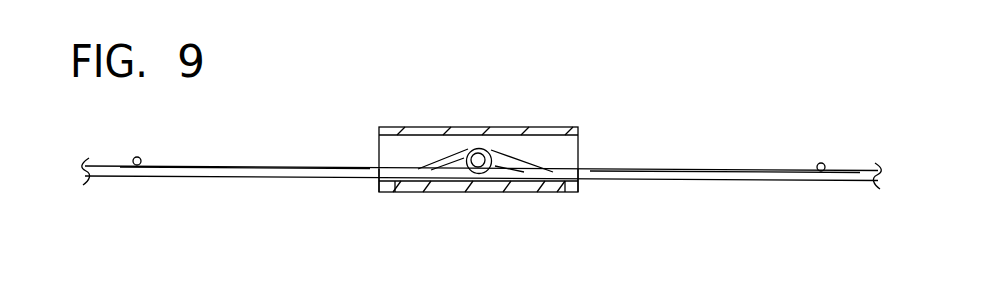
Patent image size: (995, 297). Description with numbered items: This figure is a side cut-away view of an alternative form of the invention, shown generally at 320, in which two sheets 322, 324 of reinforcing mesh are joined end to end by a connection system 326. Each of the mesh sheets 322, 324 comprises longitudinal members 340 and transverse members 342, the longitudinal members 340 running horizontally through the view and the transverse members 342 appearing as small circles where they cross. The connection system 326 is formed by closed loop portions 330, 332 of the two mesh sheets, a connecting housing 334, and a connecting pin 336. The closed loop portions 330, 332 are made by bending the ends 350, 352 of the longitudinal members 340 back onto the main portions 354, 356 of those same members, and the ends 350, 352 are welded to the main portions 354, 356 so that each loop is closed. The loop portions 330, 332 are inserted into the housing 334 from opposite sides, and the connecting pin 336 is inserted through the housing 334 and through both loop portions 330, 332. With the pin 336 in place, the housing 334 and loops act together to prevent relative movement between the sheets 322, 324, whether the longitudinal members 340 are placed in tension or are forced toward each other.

The alternative form of the invention 320 is at (479, 142).
The mesh sheet 322 is at (218, 161).
The mesh sheet 324 is at (777, 159).
The connection system 326 is at (445, 112).
The closed loop portion 330 is at (443, 147).
The closed loop portion 332 is at (513, 147).
The connecting housing 334 is at (458, 190).
The connecting pin 336 is at (480, 162).
The longitudinal member 340 is at (188, 177).
The transverse member 342 is at (139, 157).
The end of longitudinal member 350 is at (423, 162).
The end of longitudinal member 352 is at (533, 163).
The main portion of longitudinal member 354 is at (410, 171).
The main portion of longitudinal member 356 is at (550, 171).